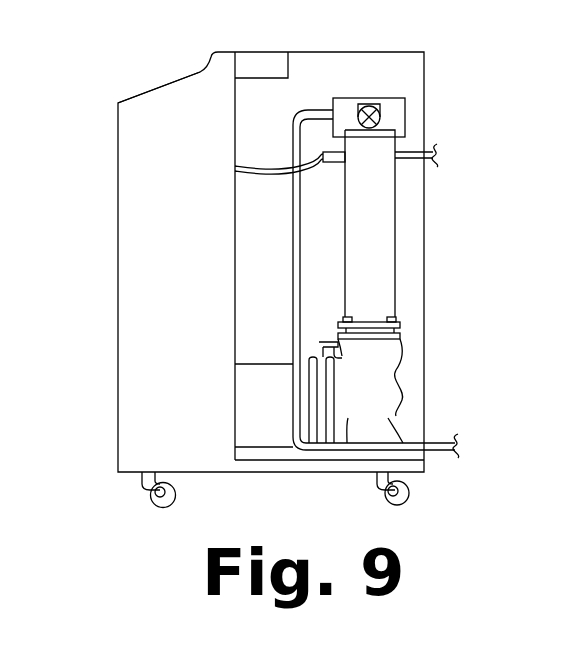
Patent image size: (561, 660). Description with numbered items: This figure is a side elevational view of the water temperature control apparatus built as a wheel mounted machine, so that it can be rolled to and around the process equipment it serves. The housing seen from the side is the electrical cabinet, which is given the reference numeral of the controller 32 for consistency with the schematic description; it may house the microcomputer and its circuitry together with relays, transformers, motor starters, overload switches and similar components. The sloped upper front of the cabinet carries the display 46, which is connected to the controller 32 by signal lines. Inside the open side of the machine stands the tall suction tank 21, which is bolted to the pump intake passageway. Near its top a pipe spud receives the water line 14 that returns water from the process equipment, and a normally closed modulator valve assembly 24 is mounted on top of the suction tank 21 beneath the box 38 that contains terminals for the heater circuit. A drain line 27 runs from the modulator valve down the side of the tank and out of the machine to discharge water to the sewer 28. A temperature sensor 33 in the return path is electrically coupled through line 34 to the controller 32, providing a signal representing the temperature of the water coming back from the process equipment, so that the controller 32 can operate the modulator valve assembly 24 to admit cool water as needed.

The water line 14 is at (400, 162).
The suction tank 21 is at (387, 283).
The modulator valve assembly 24 is at (386, 128).
The drain line 27 is at (293, 257).
The sewer 28 is at (442, 452).
The controller 32 is at (135, 163).
The temperature sensor 33 is at (332, 150).
The line 34 is at (262, 173).
The box 38 is at (390, 98).
The display 46 is at (160, 85).